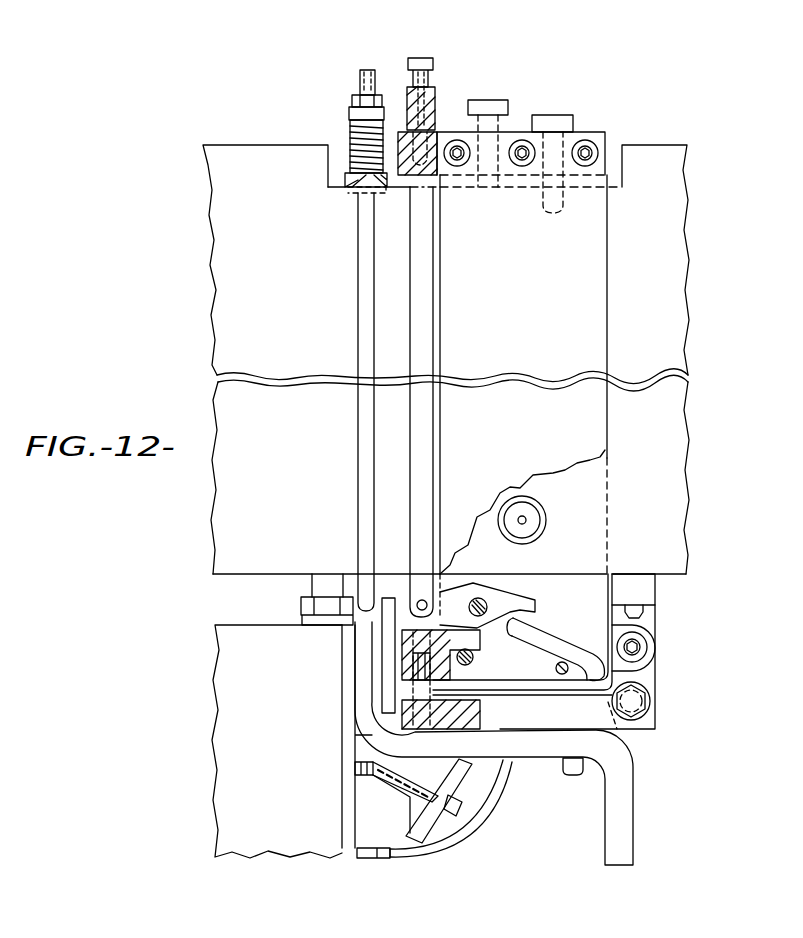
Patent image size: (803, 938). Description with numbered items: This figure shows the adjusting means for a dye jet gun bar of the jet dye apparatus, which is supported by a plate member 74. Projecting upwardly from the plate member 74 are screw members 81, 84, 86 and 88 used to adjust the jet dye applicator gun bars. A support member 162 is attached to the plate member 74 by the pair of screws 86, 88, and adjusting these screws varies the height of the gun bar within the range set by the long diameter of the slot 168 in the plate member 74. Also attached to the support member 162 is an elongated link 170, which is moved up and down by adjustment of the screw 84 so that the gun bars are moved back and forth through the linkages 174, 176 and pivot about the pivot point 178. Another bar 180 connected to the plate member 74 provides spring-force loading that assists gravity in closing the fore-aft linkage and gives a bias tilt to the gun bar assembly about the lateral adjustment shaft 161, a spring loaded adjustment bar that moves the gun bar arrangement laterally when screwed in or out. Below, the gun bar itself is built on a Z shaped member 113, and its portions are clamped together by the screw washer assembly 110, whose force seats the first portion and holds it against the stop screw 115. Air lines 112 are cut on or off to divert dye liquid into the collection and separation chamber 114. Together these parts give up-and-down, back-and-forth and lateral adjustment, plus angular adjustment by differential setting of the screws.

The plate member 74 is at (248, 160).
The screw member 81 is at (358, 75).
The screw 84 is at (418, 58).
The screw 86 is at (490, 100).
The screw 88 is at (548, 118).
The support member 162 is at (595, 132).
The bar 180 is at (358, 282).
The elongated link 170 is at (430, 268).
The slot 168 is at (522, 497).
The linkage 174 is at (490, 602).
The linkage 176 is at (558, 632).
The pivot point 178 is at (640, 645).
The spring loaded adjustment bar 161 is at (645, 702).
The Z shaped member 113 is at (628, 790).
The air line 112 is at (485, 815).
The screw washer assembly 110 is at (425, 828).
The stop screw 115 is at (353, 768).
The collection and separation chamber 114 is at (245, 707).